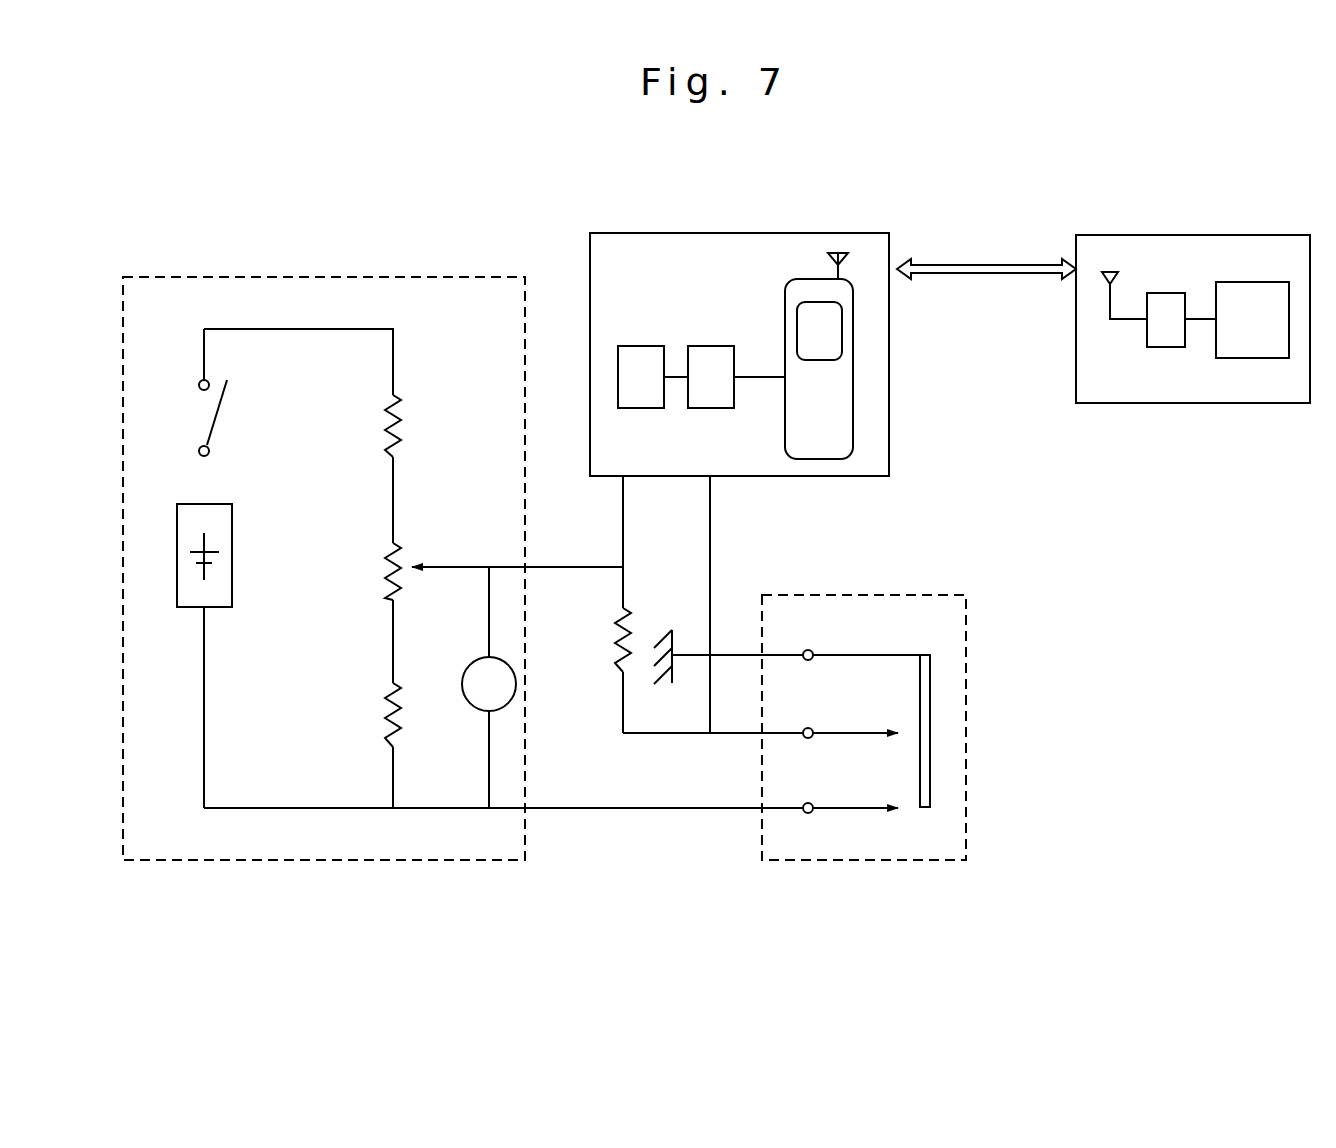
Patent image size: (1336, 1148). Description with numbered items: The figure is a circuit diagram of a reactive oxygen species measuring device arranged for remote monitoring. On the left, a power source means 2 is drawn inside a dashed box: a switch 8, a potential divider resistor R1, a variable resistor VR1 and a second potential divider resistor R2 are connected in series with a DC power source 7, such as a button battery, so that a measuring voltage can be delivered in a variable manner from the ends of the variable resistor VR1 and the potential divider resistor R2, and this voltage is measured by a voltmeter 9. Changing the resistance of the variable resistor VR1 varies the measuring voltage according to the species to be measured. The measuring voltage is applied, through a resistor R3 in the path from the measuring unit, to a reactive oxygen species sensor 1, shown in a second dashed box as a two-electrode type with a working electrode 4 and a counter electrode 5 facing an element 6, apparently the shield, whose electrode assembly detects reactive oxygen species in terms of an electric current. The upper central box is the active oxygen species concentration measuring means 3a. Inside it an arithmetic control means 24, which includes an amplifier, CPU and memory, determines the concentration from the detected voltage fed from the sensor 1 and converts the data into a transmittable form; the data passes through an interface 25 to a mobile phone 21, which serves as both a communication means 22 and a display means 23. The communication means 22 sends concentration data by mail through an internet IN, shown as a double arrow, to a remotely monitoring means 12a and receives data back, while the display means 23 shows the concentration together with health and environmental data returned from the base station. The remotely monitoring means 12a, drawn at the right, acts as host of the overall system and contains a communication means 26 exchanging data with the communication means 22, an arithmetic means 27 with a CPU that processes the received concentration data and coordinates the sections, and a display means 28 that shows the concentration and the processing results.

The reactive oxygen species sensor 1 is at (966, 765).
The power source means 2 is at (325, 860).
The active oxygen species concentration measuring means 3a is at (873, 452).
The working electrode 4 is at (855, 812).
The counter electrode 5 is at (862, 733).
The electrode plate 6 is at (931, 687).
The DC power source 7 is at (177, 557).
The switch 8 is at (214, 415).
The voltmeter 9 is at (465, 704).
The remotely monitoring means 12a is at (1225, 255).
The mobile phone 21 is at (845, 392).
The communication means 22 is at (840, 250).
The display means 23 is at (842, 326).
The arithmetic control means 24 is at (640, 346).
The interface 25 is at (712, 346).
The communication means 26 is at (1110, 270).
The arithmetic means 27 is at (1167, 335).
The display means 28 is at (1256, 335).
The potential divider resistor R1 is at (375, 427).
The potential divider resistor R2 is at (375, 716).
The resistor R3 is at (612, 637).
The variable resistor VR1 is at (376, 567).
The internet IN is at (984, 258).